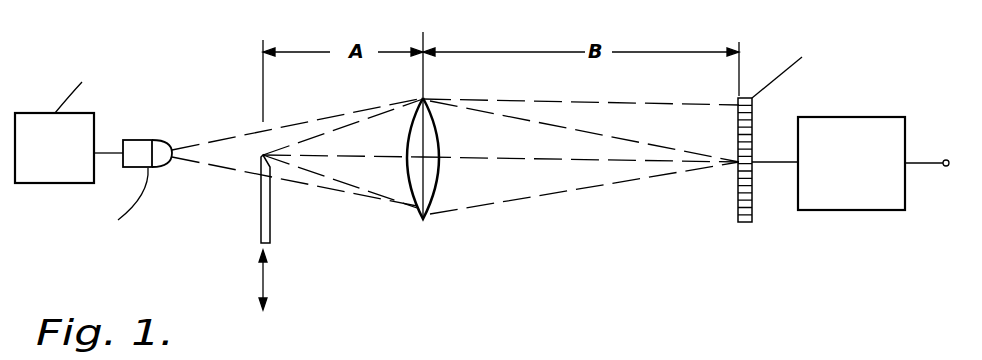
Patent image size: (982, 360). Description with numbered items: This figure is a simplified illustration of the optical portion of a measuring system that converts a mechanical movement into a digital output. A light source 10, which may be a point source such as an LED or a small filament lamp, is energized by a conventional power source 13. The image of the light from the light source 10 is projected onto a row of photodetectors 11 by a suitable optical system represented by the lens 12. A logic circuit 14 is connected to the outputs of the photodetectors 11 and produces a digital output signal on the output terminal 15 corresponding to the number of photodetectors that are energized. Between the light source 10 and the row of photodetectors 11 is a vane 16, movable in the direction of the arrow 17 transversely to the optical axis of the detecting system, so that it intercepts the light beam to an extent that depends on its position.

The light source 10 is at (148, 138).
The row of photodetectors 11 is at (748, 222).
The lens 12 is at (437, 180).
The power source 13 is at (30, 183).
The logic circuit 14 is at (883, 210).
The output terminal 15 is at (946, 160).
The vane 16 is at (270, 230).
The arrow 17 is at (263, 280).